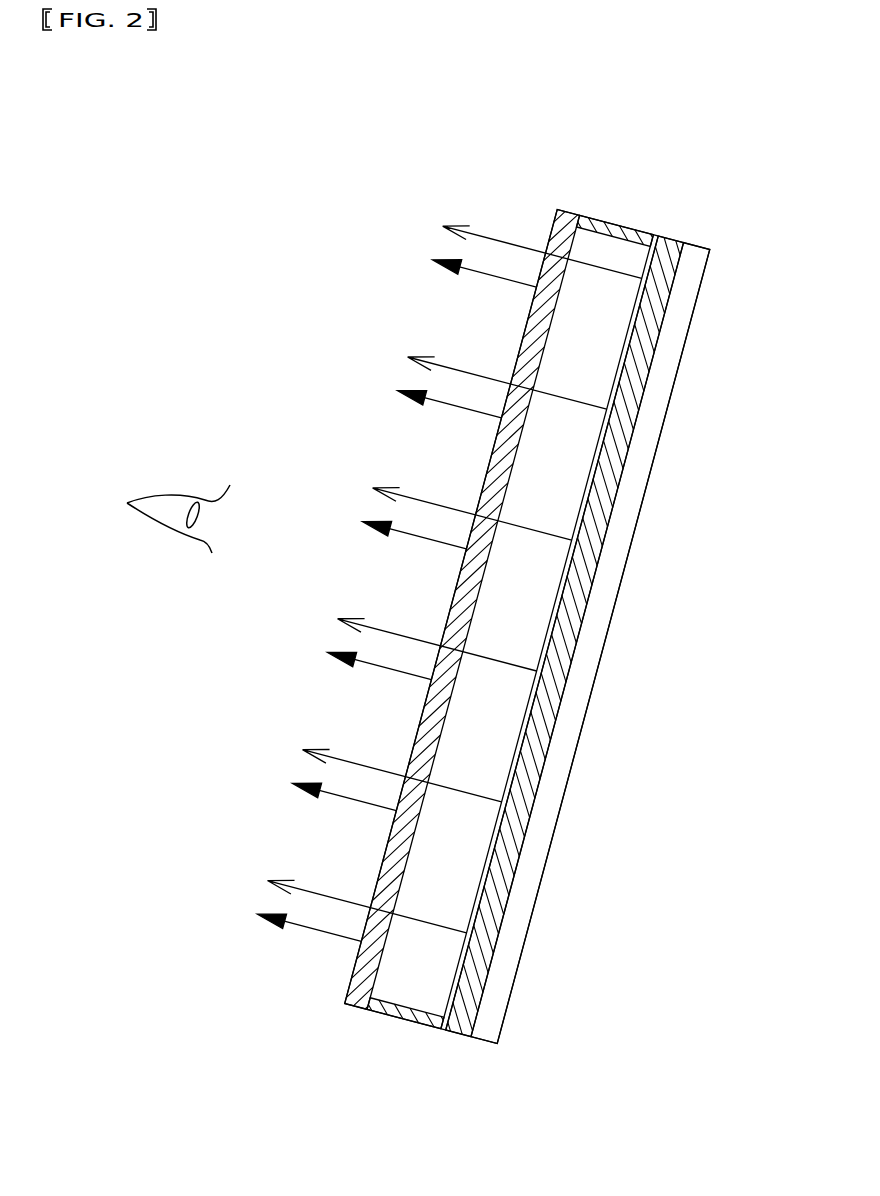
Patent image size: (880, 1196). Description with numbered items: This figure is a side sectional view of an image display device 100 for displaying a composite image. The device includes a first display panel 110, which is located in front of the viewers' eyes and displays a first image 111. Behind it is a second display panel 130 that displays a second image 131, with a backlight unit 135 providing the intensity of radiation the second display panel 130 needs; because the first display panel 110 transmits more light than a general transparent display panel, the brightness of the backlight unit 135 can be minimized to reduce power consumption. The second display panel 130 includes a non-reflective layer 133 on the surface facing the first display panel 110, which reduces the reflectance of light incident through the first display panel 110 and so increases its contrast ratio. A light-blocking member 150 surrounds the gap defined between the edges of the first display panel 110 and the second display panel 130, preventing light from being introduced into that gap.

The image display device 100 is at (390, 170).
The first display panel 110 is at (518, 343).
The first image 111 is at (413, 534).
The second display panel 130 is at (650, 345).
The second image 131 is at (550, 536).
The non-reflective layer 133 is at (590, 485).
The backlight unit 135 is at (684, 302).
The light-blocking member 150 is at (619, 226).